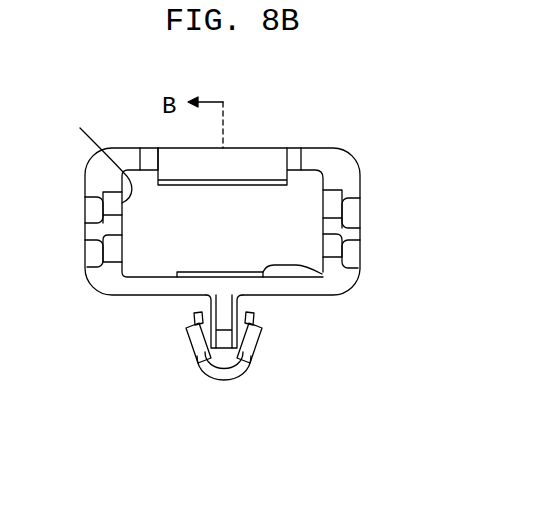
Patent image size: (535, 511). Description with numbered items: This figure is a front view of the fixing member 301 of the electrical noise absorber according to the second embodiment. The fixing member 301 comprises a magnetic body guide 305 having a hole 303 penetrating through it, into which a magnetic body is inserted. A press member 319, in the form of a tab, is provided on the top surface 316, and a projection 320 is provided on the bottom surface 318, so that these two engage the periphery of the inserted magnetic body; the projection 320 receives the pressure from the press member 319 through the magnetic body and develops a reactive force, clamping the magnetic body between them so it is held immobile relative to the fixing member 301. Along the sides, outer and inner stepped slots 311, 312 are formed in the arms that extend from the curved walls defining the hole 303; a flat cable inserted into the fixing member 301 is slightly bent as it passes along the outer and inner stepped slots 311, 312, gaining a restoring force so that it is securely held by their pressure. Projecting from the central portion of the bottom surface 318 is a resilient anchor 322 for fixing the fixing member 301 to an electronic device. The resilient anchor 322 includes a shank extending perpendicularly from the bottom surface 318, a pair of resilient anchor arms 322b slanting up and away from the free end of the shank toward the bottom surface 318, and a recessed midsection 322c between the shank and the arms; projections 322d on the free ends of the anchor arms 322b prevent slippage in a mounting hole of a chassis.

The fixing member 301 is at (79, 211).
The hole 303 is at (161, 228).
The magnetic body guide 305 is at (87, 153).
The outer stepped slot 311 is at (352, 229).
The inner stepped slot 312 is at (330, 226).
The top surface 316 is at (147, 152).
The bottom surface 318 is at (215, 285).
The press member 319 is at (260, 165).
The projection 320 is at (343, 278).
The resilient anchor 322 is at (237, 382).
The resilient anchor arms 322b is at (197, 357).
The recessed midsection 322c is at (220, 334).
The projections 322d is at (198, 313).